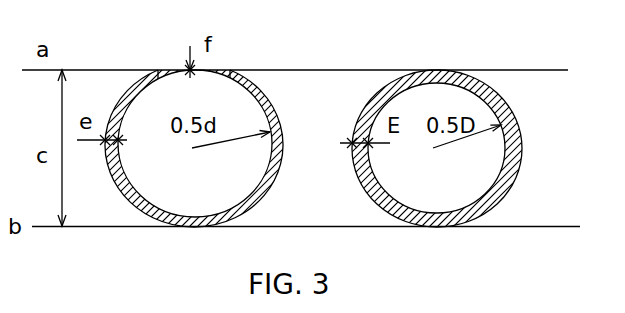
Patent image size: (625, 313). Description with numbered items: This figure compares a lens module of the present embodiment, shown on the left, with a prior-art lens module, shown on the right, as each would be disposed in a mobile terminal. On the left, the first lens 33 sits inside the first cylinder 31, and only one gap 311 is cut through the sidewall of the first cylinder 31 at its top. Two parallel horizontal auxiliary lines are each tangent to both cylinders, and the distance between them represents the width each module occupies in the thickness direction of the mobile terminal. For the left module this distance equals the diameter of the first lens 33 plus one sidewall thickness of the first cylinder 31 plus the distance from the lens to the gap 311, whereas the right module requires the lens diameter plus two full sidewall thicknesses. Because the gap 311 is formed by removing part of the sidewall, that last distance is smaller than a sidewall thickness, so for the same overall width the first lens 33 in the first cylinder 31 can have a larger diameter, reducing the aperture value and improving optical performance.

The first cylinder 31 is at (256, 97).
The gap 311 is at (226, 71).
The first lens 33 is at (243, 174).